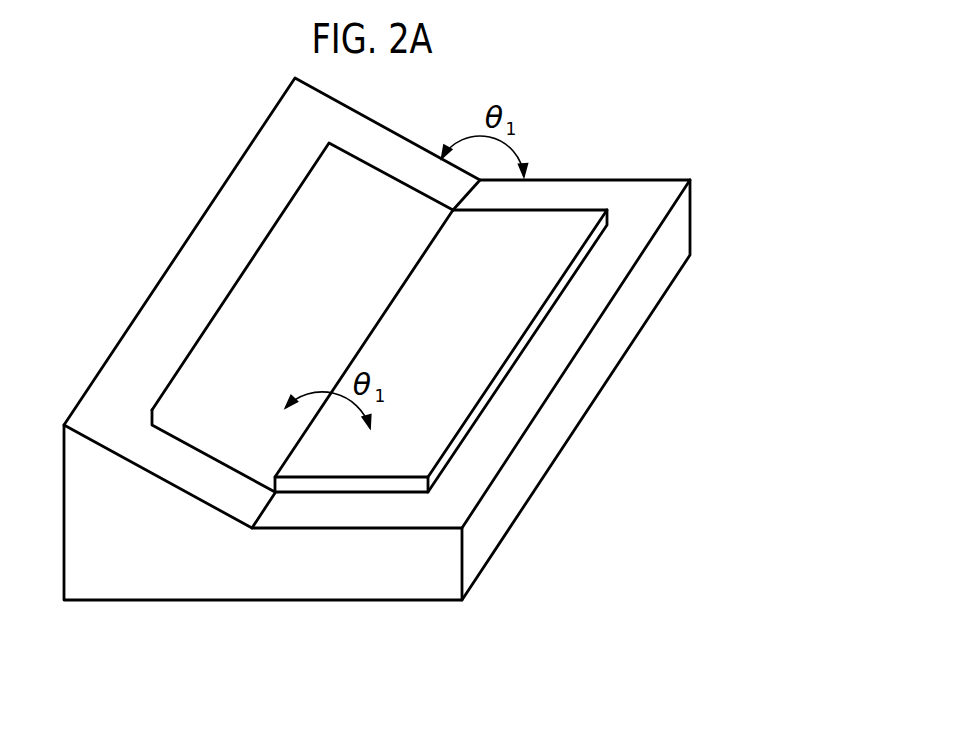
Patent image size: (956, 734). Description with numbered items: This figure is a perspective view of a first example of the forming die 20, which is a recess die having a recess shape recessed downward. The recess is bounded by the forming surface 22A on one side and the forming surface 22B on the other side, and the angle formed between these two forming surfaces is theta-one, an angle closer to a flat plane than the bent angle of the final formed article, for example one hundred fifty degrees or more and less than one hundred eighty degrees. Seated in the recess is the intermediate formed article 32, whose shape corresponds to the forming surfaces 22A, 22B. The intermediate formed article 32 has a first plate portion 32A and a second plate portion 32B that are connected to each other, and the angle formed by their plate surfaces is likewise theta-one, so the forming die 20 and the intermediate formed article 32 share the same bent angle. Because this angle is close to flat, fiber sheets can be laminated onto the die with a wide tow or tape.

The forming die 20 is at (652, 203).
The forming surface 22A is at (515, 400).
The forming surface 22B is at (120, 368).
The intermediate formed article 32 is at (369, 394).
The first plate portion 32A is at (355, 462).
The second plate portion 32B is at (227, 298).